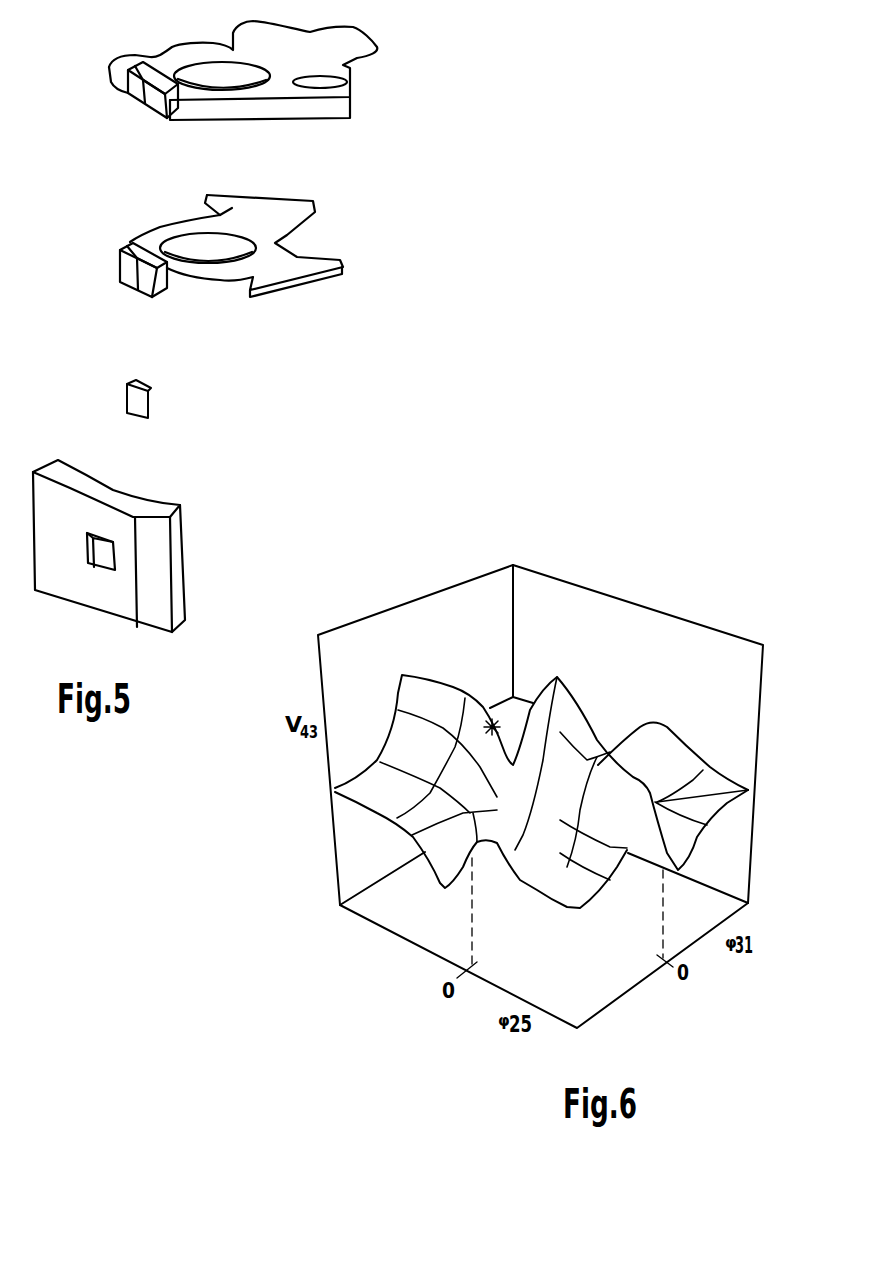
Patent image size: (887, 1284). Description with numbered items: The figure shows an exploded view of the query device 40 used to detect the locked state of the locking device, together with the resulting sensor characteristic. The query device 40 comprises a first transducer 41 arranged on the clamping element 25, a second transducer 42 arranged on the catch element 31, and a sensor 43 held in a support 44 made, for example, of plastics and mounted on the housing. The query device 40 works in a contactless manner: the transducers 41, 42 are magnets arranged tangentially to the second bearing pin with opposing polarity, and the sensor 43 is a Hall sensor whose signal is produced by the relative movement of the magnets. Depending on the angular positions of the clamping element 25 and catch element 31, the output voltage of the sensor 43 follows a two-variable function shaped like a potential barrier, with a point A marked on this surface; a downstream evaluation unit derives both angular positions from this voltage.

In FIG. 5, the catch element 31 is at (303, 42).
In FIG. 5, the second transducer 42 is at (137, 93).
In FIG. 5, the clamping element 25 is at (280, 262).
In FIG. 5, the first transducer 41 is at (130, 280).
In FIG. 5, the query device 40 is at (393, 242).
In FIG. 5, the sensor 43 is at (138, 400).
In FIG. 5, the support 44 is at (102, 495).
In FIG. 6, the operating point on characteristic surface A is at (495, 726).